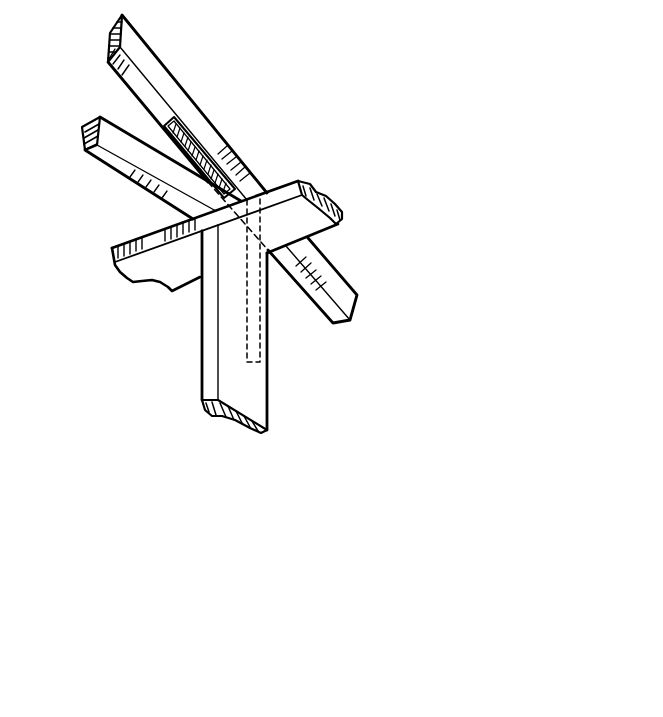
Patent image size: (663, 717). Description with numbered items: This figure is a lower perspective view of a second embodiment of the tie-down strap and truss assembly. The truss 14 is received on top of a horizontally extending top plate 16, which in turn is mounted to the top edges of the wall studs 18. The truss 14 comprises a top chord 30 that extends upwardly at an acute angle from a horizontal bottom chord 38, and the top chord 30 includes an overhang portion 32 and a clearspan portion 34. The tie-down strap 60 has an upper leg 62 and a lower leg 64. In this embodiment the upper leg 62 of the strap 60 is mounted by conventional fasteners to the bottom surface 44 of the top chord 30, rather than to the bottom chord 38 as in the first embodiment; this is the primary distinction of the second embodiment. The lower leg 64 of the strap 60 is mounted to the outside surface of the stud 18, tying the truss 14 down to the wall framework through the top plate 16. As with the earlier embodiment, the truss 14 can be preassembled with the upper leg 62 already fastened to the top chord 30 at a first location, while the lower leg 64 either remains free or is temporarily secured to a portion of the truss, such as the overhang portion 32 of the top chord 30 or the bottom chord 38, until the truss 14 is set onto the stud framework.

The truss 14 is at (263, 112).
The top plate 16 is at (298, 180).
The stud 18 is at (230, 378).
The top chord 30 is at (117, 73).
The overhang portion 32 is at (352, 287).
The clearspan portion 34 is at (150, 43).
The bottom chord 38 is at (113, 176).
The bottom surface 44 is at (157, 100).
The strap 60 is at (242, 166).
The upper leg 62 is at (203, 111).
The lower leg 64 is at (270, 350).